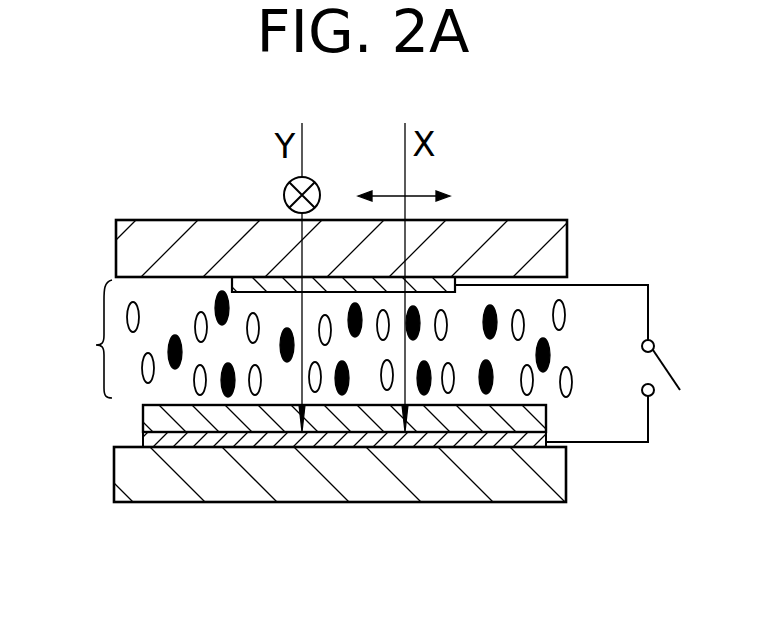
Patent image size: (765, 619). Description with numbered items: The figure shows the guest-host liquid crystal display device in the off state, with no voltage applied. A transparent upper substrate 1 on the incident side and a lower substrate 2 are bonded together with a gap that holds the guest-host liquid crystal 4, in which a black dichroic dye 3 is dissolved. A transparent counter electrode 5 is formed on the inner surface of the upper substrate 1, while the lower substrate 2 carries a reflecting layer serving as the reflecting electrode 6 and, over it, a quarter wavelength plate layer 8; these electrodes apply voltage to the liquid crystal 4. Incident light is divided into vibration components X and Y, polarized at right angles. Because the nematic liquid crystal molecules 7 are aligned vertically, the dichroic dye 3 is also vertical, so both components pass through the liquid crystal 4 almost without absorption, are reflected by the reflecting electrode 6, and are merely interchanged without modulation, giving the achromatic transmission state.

The upper substrate 1 is at (556, 250).
The lower substrate 2 is at (488, 492).
The dichroic dye 3 is at (220, 292).
The guest-host liquid crystal 4 is at (102, 345).
The counter electrode 5 is at (446, 289).
The reflecting electrode 6 is at (172, 440).
The nematic liquid crystal molecules 7 is at (140, 308).
The quarter wavelength plate layer 8 is at (143, 414).